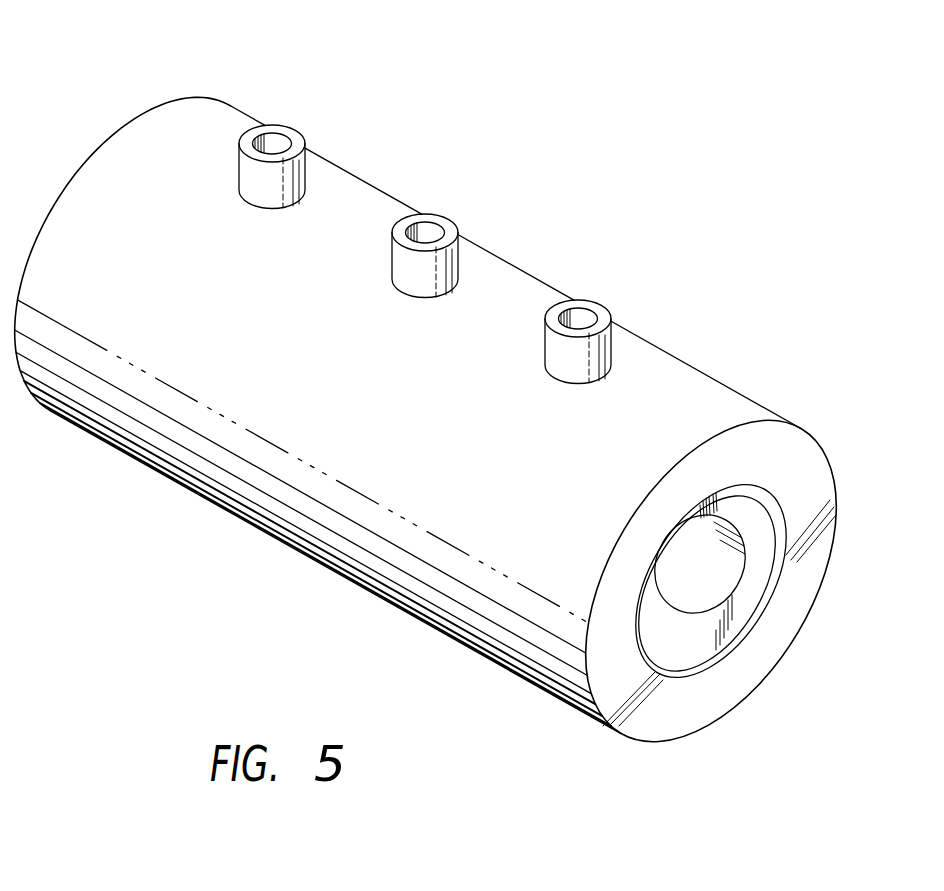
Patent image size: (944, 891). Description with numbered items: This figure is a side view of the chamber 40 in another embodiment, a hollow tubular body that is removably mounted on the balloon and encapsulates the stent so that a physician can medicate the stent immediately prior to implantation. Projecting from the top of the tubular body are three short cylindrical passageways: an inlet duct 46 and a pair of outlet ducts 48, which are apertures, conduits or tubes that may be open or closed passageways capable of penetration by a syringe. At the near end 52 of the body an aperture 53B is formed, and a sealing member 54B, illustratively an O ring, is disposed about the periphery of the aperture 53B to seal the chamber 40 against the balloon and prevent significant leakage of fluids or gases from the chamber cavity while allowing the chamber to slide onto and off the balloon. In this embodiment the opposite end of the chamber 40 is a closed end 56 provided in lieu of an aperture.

The chamber 40 is at (452, 426).
The inlet duct 46 is at (425, 232).
The outlet ducts 48 is at (272, 143).
The end 52 is at (715, 706).
The aperture 53B is at (747, 642).
The sealing member 54B is at (755, 501).
The closed end 56 is at (71, 179).